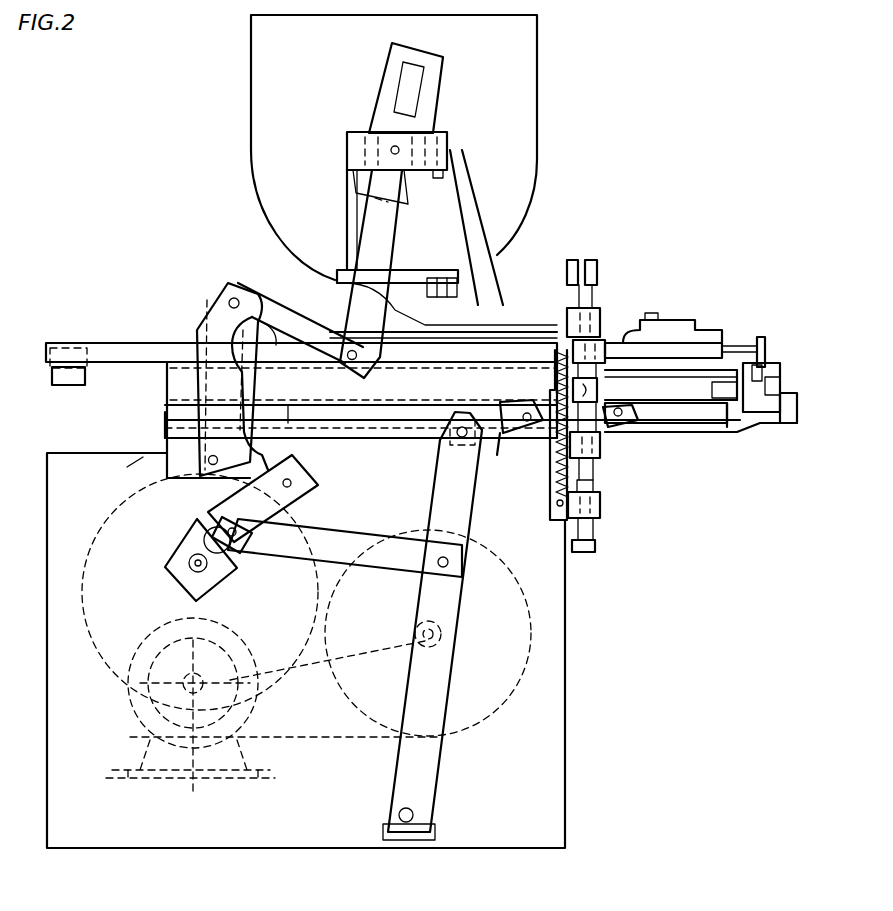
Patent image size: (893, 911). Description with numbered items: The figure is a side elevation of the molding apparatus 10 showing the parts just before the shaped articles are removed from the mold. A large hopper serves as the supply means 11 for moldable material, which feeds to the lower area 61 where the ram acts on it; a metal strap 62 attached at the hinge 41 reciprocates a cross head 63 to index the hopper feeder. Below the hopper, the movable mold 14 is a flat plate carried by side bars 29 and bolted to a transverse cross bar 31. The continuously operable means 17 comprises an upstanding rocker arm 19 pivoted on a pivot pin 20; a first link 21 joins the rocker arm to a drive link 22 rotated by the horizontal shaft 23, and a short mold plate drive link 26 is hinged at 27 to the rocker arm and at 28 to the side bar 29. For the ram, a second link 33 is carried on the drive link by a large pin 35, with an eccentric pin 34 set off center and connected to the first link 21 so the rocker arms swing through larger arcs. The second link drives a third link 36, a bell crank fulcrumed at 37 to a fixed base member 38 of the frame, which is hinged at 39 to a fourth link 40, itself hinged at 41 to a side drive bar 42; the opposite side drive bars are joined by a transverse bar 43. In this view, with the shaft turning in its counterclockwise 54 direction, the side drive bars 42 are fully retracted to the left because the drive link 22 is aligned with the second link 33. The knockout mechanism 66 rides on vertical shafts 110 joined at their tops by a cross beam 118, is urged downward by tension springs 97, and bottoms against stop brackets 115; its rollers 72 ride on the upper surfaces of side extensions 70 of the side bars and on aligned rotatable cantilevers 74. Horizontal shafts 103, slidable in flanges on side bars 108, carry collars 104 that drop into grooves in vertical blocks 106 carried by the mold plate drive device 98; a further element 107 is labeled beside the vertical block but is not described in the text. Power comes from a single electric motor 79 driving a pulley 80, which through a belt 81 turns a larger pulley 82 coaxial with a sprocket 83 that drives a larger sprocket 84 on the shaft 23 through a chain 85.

The molding apparatus 10 is at (146, 246).
The supply means 11 is at (500, 97).
The movable mold 14 is at (641, 374).
The continuously operable means 17 is at (458, 632).
The rocker arm 19 is at (447, 690).
The pivot pin 20 is at (397, 808).
The first link 21 is at (335, 520).
The drive link 22 is at (204, 586).
The horizontal shaft 23 is at (180, 592).
The mold plate drive link 26 is at (502, 440).
The hinged connection 27 is at (445, 440).
The hinged connection 28 is at (530, 428).
The side bar 29 is at (400, 419).
The transverse cross bar 31 is at (722, 426).
The second link 33 is at (246, 511).
The eccentric pin 34 is at (254, 556).
The large pin 35 is at (208, 522).
The third link 36 is at (210, 388).
The fulcrum 37 is at (211, 460).
The fixed base member 38 is at (162, 491).
The hinged connection 39 is at (233, 303).
The fourth link 40 is at (270, 300).
The hinged connection 41 is at (350, 362).
The side drive bar 42 is at (117, 343).
The transverse bar 43 is at (68, 386).
The counterclockwise rotation 54 is at (185, 568).
The lower area of the hopper 61 is at (341, 302).
The metal strap 62 is at (380, 240).
The cross head 63 is at (394, 68).
The knockout mechanism 66 is at (680, 320).
The side extension 70 is at (692, 436).
The roller 72 is at (550, 378).
The rotatable cantilever 74 is at (636, 426).
The electric motor 79 is at (190, 782).
The pulley 80 is at (135, 725).
The belt 81 is at (310, 744).
The larger pulley 82 is at (498, 722).
The sprocket 83 is at (404, 623).
The larger sprocket 84 is at (90, 618).
The chain 85 is at (302, 682).
The tension spring 97 is at (553, 474).
The mold plate drive device 98 is at (800, 428).
The horizontal shaft 103 is at (742, 346).
The collar 104 is at (765, 360).
The vertical block 106 is at (788, 384).
The pin 107 is at (760, 373).
The side bar 108 is at (700, 346).
The vertical shaft 110 is at (588, 306).
The stop bracket 115 is at (600, 506).
The cross beam 118 is at (598, 276).